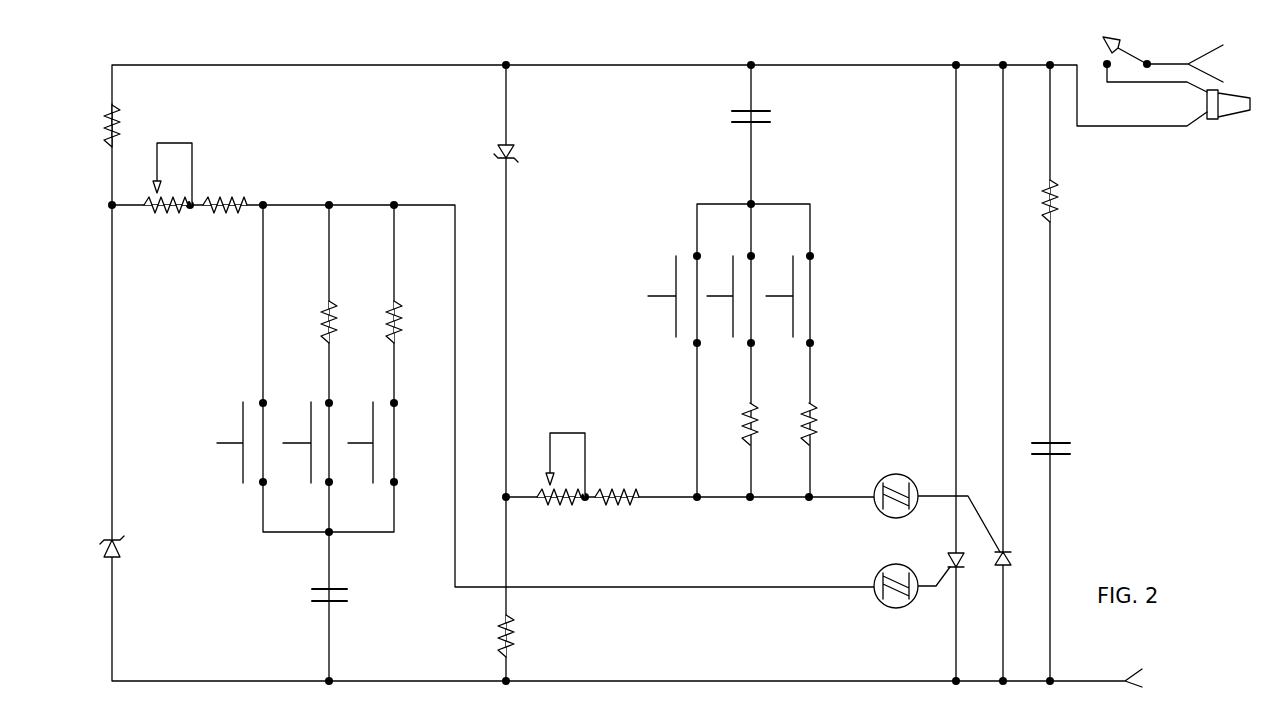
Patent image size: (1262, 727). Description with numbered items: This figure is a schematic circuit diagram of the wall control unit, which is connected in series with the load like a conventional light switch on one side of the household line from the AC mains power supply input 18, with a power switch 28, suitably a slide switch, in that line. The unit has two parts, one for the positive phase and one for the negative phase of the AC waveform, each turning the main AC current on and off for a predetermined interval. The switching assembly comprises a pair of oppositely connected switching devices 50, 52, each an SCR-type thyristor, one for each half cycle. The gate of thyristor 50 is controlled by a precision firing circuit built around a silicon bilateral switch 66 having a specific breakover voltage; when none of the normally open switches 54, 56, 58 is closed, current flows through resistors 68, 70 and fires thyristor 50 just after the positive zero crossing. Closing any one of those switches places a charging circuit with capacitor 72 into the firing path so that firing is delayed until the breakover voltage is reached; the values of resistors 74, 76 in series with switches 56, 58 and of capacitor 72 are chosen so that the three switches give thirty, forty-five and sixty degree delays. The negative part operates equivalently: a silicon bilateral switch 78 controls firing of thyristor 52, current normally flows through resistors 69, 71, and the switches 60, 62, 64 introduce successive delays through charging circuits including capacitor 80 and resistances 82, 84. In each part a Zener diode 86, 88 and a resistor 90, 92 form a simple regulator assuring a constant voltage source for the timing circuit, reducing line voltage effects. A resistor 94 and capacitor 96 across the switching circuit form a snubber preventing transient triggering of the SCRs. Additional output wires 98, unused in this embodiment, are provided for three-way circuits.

The AC mains power supply input 18 is at (1235, 113).
The power switch 28 is at (1097, 36).
The switching device 50 is at (1008, 552).
The switching device 52 is at (950, 555).
The normally open switch 54 is at (677, 300).
The normally open switch 56 is at (735, 300).
The normally open switch 58 is at (795, 300).
The normally open switch 60 is at (245, 452).
The normally open switch 62 is at (312, 452).
The normally open switch 64 is at (374, 452).
The silicon bilateral switch 66 is at (888, 475).
The resistor 68 is at (540, 505).
The resistor 69 is at (163, 220).
The resistor 70 is at (620, 505).
The resistor 71 is at (222, 199).
The capacitor 72 is at (766, 121).
The resistor 74 is at (755, 406).
The resistor 76 is at (815, 406).
The silicon bilateral switch 78 is at (888, 610).
The capacitor 80 is at (335, 591).
The resistance 82 is at (337, 303).
The resistance 84 is at (397, 303).
The Zener diode 86 is at (515, 155).
The Zener diode 88 is at (122, 545).
The resistor 90 is at (516, 637).
The resistor 92 is at (121, 131).
The resistor 94 is at (1065, 212).
The capacitor 96 is at (1062, 443).
The additional output wires 98 is at (1132, 84).